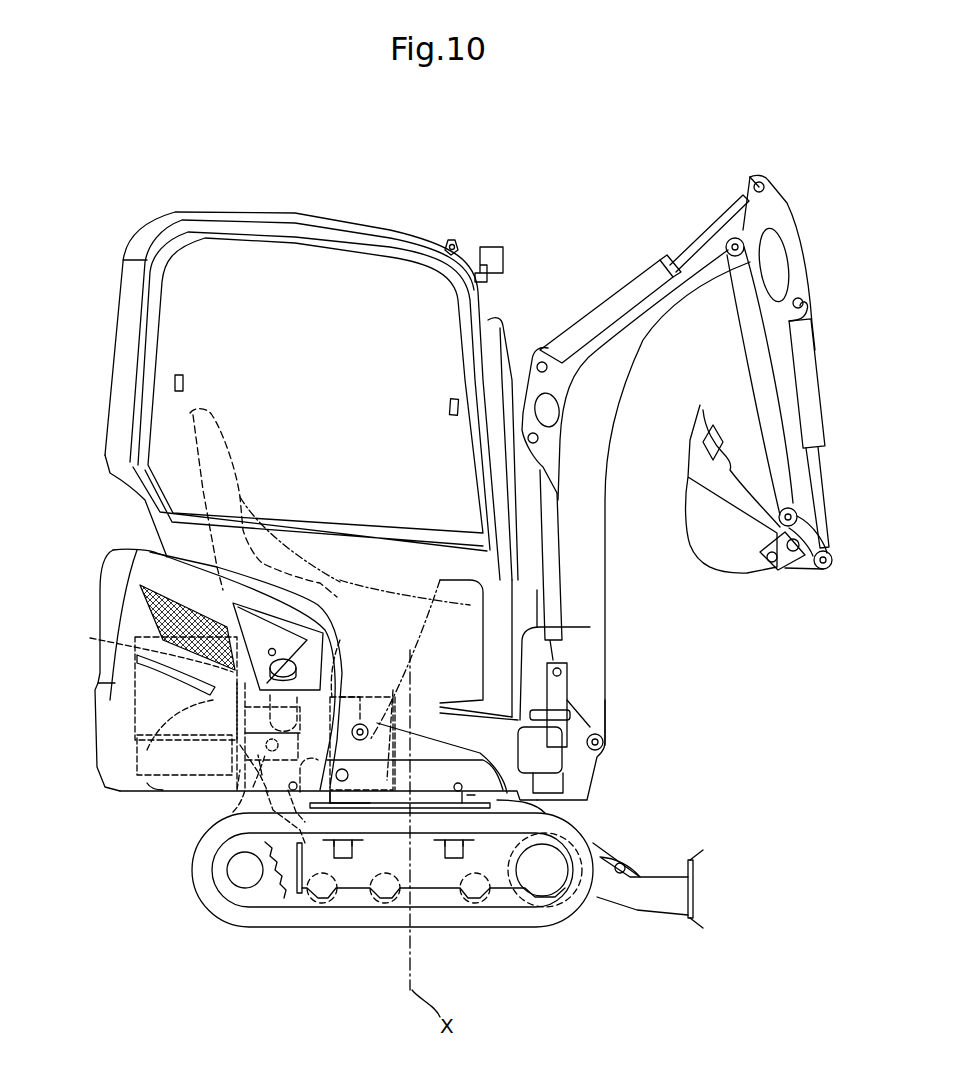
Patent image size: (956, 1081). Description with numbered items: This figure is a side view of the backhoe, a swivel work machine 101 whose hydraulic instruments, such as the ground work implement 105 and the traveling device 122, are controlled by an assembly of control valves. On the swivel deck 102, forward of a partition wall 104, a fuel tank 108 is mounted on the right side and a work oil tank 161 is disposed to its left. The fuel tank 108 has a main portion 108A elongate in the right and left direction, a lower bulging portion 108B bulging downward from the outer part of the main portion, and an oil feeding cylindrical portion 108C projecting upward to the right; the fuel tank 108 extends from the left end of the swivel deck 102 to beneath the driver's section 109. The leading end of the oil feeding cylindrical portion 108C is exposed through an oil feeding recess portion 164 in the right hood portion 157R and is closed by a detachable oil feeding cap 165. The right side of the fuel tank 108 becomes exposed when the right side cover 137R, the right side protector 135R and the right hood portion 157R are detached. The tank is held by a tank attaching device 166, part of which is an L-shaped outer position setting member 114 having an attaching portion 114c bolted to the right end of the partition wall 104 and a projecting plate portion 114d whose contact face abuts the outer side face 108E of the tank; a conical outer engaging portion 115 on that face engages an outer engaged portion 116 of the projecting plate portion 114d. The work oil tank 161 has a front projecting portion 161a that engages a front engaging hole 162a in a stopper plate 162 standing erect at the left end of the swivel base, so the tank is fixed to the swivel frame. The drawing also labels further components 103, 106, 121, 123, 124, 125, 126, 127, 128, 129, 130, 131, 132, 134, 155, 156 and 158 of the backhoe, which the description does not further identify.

The swivel work machine 101 is at (526, 186).
The swivel deck 102 is at (83, 731).
The swing frame 103 is at (147, 750).
The partition wall 104 is at (233, 812).
The ground work implement 105 is at (678, 207).
The swing bracket cover 106 is at (590, 627).
The fuel tank 108 is at (340, 640).
The main portion 108A is at (340, 697).
The lower bulging portion 108B is at (253, 787).
The oil feeding cylindrical portion 108C is at (133, 643).
The outer side face 108E is at (237, 790).
The driver's section 109 is at (240, 497).
The outer position setting member 114 is at (243, 750).
The attaching portion 114c is at (237, 725).
The projecting plate portion 114d is at (310, 807).
The outer engaging portion 115 is at (278, 792).
The outer engaged portion 116 is at (290, 735).
The crawler traveling unit 121 is at (515, 913).
The traveling device 122 is at (367, 930).
The swing circle 123 is at (560, 815).
The blade 124 is at (663, 903).
The cab 125 is at (422, 233).
The swing bracket 126 is at (580, 768).
The boom 127 is at (595, 505).
The arm 128 is at (765, 360).
The bucket 129 is at (713, 557).
The cab rear panel 130 is at (520, 570).
The boom cylinder 131 is at (597, 320).
The bucket cylinder 132 is at (812, 403).
The lower rear cover 134 is at (98, 707).
The right side protector 135R is at (147, 783).
The right side cover 137R is at (477, 730).
The rear body cover 155 is at (97, 556).
The counterweight 156 is at (100, 595).
The right hood portion 157R is at (142, 560).
The front pillar 158 is at (340, 578).
The work oil tank 161 is at (370, 778).
The front projecting portion 161a is at (393, 690).
The stopper plate 162 is at (350, 775).
The front engaging hole 162a is at (403, 743).
The oil feeding recess portion 164 is at (233, 603).
The oil feeding cap 165 is at (332, 615).
The tank attaching device 166 is at (335, 800).